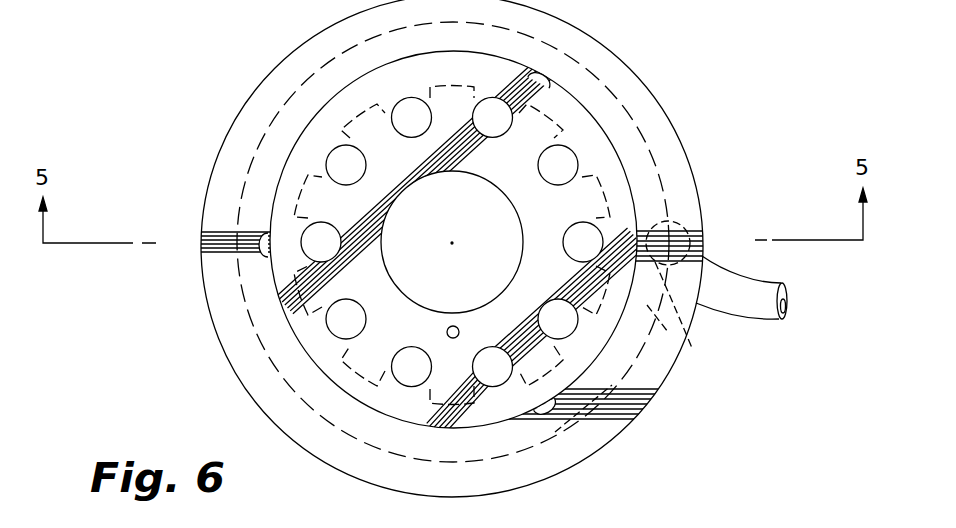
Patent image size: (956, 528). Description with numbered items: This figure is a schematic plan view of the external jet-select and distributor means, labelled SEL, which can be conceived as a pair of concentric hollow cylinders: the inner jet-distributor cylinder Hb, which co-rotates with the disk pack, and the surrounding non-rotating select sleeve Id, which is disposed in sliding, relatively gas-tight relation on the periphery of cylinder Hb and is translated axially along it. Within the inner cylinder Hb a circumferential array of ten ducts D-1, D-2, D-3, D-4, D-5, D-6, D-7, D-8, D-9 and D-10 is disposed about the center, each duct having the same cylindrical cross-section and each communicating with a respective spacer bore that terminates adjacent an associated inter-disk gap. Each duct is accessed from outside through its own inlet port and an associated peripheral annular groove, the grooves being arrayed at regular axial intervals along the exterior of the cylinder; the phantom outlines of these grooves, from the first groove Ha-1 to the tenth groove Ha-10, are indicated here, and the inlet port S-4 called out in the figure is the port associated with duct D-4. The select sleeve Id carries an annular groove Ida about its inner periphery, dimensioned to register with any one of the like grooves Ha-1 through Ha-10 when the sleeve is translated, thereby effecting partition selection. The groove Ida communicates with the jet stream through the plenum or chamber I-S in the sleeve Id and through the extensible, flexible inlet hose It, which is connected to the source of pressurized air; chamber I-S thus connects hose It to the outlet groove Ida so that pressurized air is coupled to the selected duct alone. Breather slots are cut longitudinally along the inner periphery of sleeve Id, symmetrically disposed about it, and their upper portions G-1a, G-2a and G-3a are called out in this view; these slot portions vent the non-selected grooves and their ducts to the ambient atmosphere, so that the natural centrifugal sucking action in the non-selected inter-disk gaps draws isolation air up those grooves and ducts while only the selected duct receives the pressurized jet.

The inlet port S-4 is at (323, 152).
The upper breather slot portion G-1a is at (262, 234).
The upper breather slot portion G-2a is at (545, 72).
The upper breather slot portion G-3a is at (552, 408).
The jet-distributor cylinder Hb is at (613, 150).
The select cylinder Id is at (700, 165).
The annular outlet groove Ida is at (687, 347).
The plenum chamber I-S is at (683, 230).
The inlet hose It is at (760, 278).
The inlet groove Ha-1 is at (278, 283).
The inlet groove Ha-10 is at (155, 364).
The duct D-1 is at (422, 376).
The duct D-2 is at (336, 328).
The duct D-3 is at (311, 251).
The duct D-4 is at (336, 174).
The duct D-5 is at (422, 126).
The duct D-6 is at (482, 126).
The duct D-7 is at (548, 174).
The duct D-8 is at (573, 251).
The duct D-9 is at (548, 328).
The duct D-10 is at (504, 376).
The selector SEL is at (860, 7).